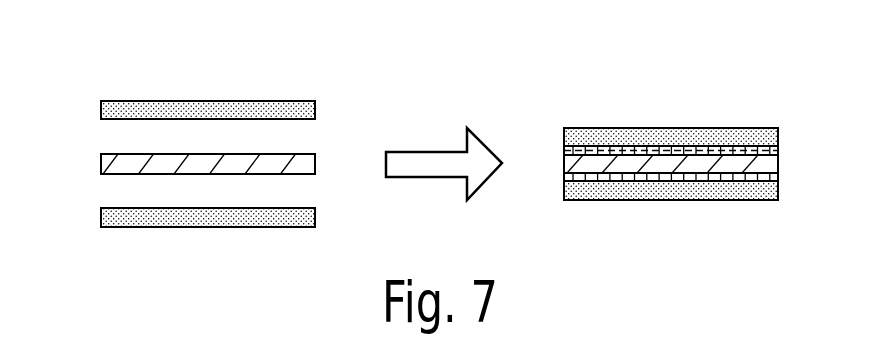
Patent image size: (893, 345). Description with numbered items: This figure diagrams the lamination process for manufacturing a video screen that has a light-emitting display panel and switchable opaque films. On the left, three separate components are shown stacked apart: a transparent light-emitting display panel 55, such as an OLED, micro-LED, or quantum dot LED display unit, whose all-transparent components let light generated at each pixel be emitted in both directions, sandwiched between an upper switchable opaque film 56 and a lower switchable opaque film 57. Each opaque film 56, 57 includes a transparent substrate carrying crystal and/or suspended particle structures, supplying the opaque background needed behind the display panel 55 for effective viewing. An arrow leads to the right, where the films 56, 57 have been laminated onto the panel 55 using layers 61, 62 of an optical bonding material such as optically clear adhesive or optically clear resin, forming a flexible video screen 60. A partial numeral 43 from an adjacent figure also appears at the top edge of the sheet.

The reference numeral (partial, from adjacent figure) 43 is at (492, 9).
The transparent light-emitting display panel 55 is at (101, 163).
The switchable opaque film 56 is at (152, 101).
The switchable opaque film 57 is at (148, 227).
The flexible video screen 60 is at (692, 164).
The layer of optical bonding material 61 is at (778, 150).
The layer of optical bonding material 62 is at (779, 178).